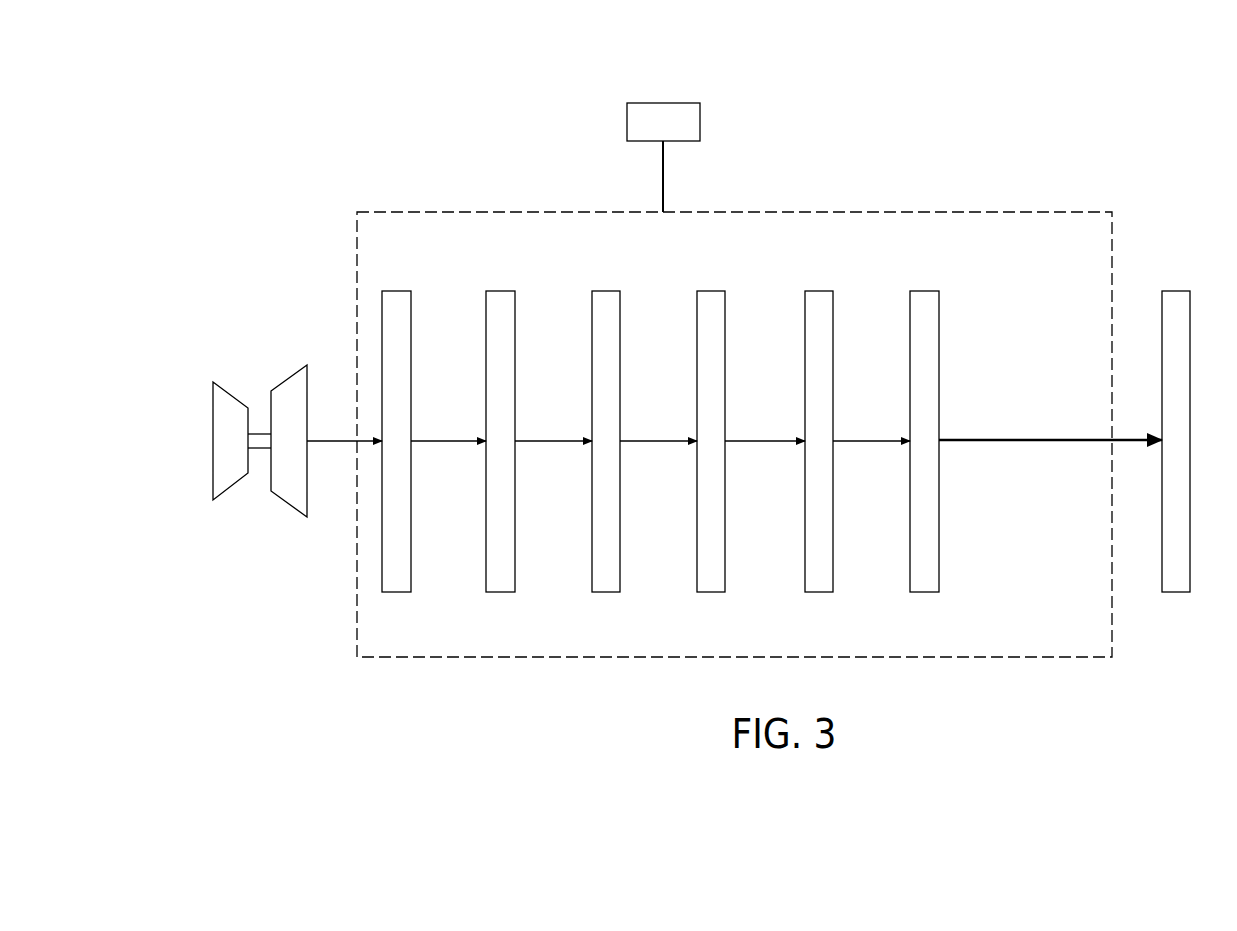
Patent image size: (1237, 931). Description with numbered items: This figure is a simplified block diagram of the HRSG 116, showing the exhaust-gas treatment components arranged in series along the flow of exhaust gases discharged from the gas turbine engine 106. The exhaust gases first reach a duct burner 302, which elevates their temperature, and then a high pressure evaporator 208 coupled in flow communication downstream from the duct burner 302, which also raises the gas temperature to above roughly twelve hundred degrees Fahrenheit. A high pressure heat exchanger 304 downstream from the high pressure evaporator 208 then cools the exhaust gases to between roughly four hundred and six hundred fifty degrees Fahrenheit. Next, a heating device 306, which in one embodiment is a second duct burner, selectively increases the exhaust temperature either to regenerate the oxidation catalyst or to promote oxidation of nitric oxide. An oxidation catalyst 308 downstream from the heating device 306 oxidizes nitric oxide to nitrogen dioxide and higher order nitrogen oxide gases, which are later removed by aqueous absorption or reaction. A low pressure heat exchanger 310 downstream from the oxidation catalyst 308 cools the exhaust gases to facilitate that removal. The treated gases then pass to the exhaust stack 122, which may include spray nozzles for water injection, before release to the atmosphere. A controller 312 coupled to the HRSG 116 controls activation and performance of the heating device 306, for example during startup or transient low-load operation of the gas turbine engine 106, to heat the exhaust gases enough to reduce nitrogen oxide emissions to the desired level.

The gas turbine engine 106 is at (290, 377).
The HRSG 116 is at (1085, 212).
The exhaust stack 122 is at (1175, 290).
The high pressure evaporator 208 is at (501, 290).
The duct burner 302 is at (397, 290).
The high pressure heat exchanger 304 is at (606, 290).
The heating device 306 is at (711, 290).
The oxidation catalyst 308 is at (819, 290).
The low pressure heat exchanger 310 is at (924, 290).
The controller 312 is at (677, 102).